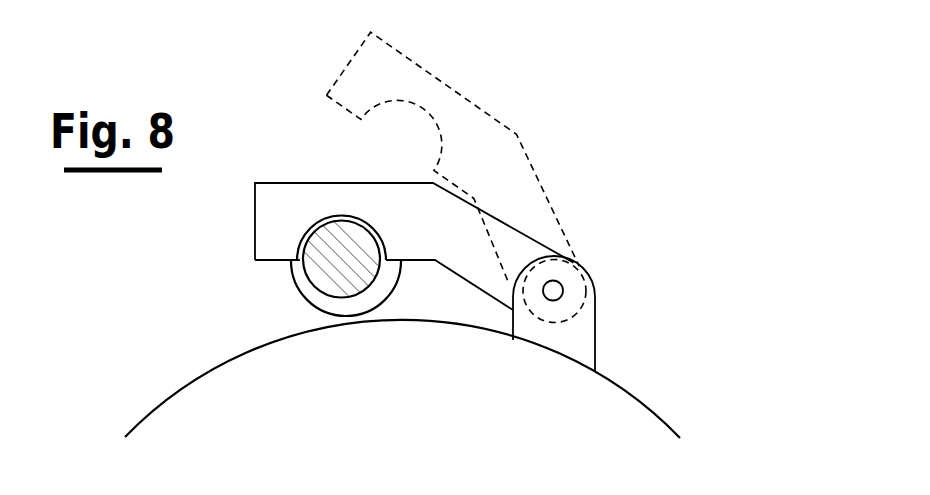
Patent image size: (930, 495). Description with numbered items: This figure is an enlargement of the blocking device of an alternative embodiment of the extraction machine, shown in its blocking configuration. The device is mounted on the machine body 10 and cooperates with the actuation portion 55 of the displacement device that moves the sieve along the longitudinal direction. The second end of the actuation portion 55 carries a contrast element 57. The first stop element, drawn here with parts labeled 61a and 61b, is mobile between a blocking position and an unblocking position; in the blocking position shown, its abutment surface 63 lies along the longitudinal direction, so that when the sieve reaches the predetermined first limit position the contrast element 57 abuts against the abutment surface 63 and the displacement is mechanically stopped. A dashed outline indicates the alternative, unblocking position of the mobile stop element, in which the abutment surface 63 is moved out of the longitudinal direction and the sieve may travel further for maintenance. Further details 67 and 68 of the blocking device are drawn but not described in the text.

The machine body 10 is at (215, 369).
The actuation portion 55 is at (325, 272).
The contrast element 57 is at (383, 282).
The pivot tab / bracket 61a is at (595, 350).
The pivoting arm 61b is at (292, 170).
The abutment surface 63 is at (291, 268).
The pivot pin 67 is at (556, 291).
The bearing ring upper portion 68 is at (311, 236).